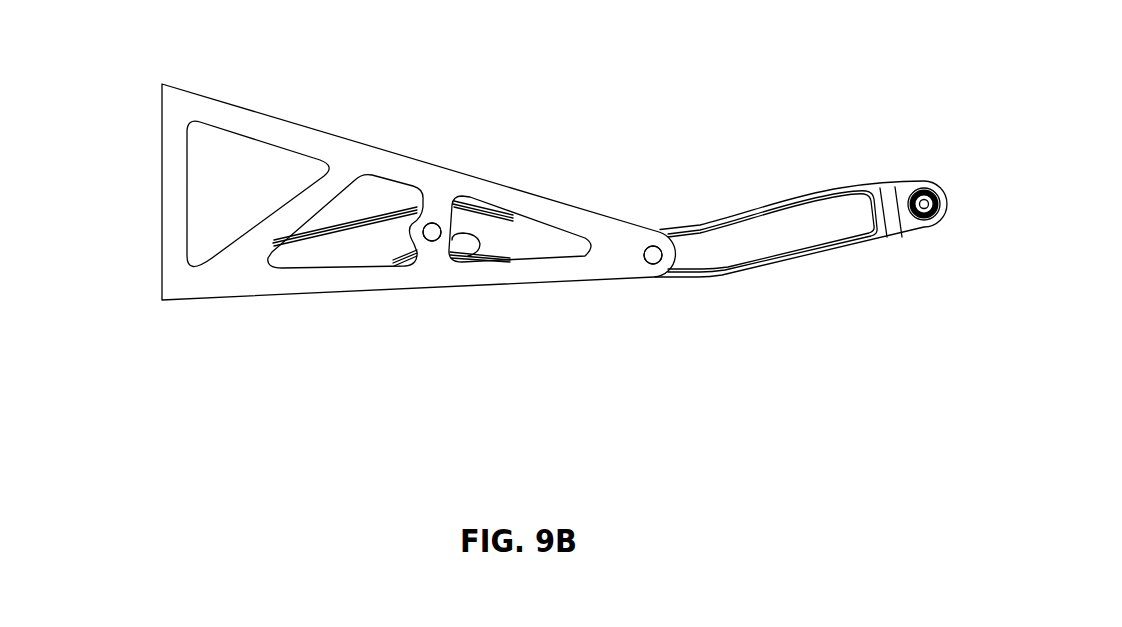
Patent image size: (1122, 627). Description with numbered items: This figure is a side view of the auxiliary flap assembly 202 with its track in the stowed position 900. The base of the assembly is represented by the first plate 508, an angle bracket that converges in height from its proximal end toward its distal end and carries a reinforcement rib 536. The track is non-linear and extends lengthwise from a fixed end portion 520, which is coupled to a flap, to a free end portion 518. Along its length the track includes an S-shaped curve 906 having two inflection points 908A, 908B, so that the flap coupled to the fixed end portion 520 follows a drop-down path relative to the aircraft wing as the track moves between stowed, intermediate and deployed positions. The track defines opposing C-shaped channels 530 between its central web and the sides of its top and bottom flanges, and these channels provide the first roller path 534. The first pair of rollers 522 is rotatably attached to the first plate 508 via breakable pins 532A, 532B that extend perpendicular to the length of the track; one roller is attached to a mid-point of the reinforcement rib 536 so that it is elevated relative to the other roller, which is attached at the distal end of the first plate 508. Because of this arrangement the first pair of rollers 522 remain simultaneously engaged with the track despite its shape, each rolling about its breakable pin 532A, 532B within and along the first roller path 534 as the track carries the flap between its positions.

The auxiliary flap assembly 202 is at (654, 66).
The first plate 508 is at (193, 110).
The free end portion 518 is at (308, 253).
The reinforcement rib 536 is at (438, 217).
The inflection point 908A is at (422, 226).
The breakable pin 532A is at (420, 241).
The first pair of rollers 522 is at (668, 273).
The stowed position 900 is at (690, 162).
The S-shaped curve 906 is at (787, 191).
The C-shaped channel 530 is at (750, 260).
The first roller path 534 is at (823, 225).
The fixed end portion 520 is at (900, 188).
The inflection point 908B is at (720, 282).
The breakable pin 532B is at (662, 263).